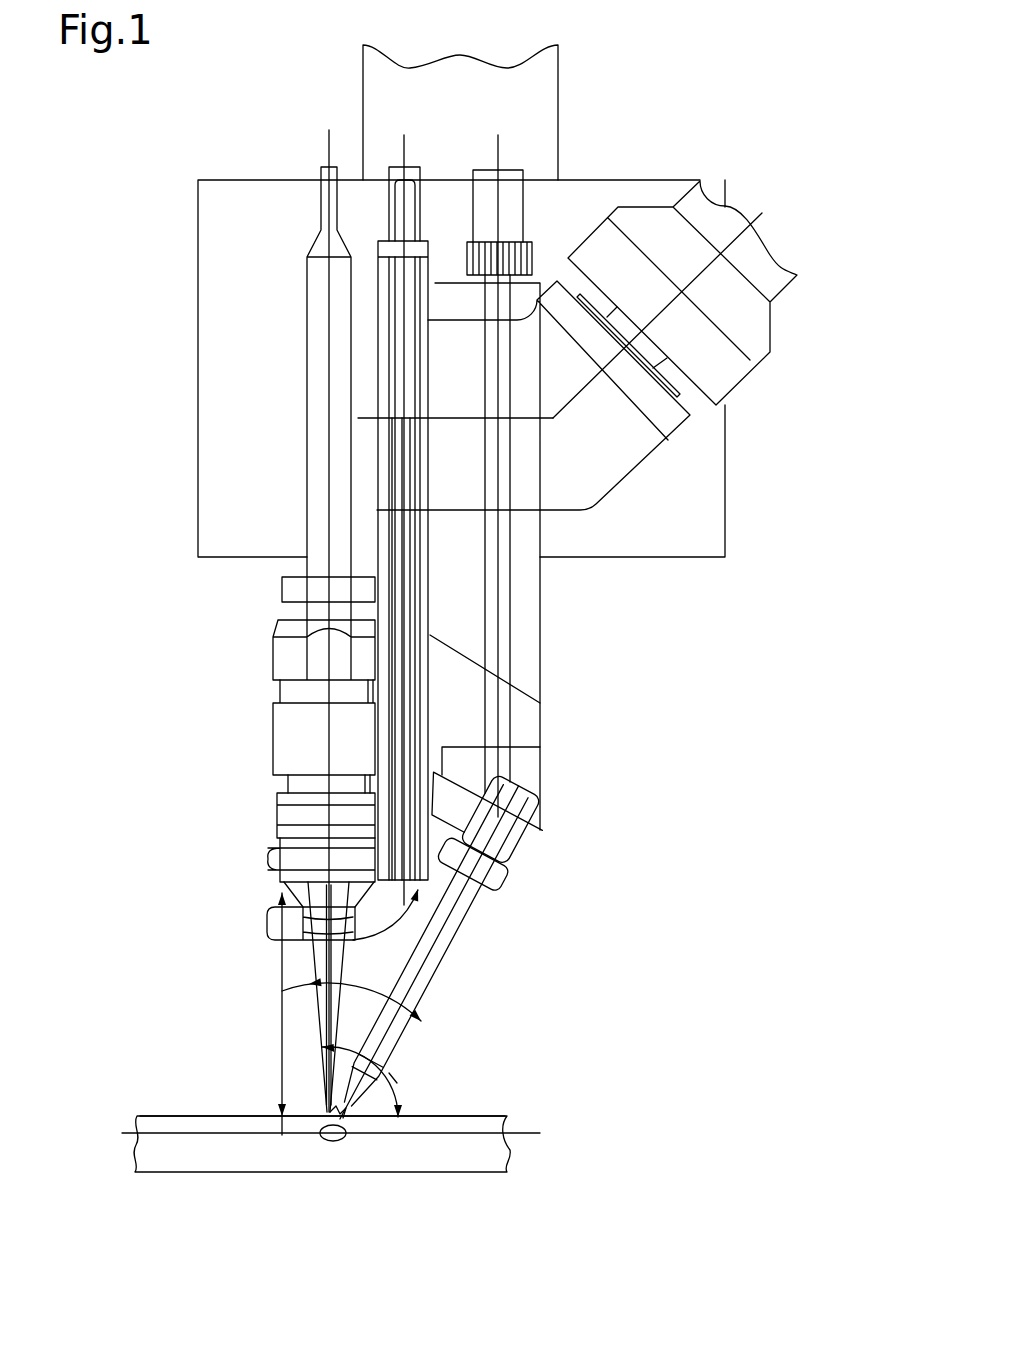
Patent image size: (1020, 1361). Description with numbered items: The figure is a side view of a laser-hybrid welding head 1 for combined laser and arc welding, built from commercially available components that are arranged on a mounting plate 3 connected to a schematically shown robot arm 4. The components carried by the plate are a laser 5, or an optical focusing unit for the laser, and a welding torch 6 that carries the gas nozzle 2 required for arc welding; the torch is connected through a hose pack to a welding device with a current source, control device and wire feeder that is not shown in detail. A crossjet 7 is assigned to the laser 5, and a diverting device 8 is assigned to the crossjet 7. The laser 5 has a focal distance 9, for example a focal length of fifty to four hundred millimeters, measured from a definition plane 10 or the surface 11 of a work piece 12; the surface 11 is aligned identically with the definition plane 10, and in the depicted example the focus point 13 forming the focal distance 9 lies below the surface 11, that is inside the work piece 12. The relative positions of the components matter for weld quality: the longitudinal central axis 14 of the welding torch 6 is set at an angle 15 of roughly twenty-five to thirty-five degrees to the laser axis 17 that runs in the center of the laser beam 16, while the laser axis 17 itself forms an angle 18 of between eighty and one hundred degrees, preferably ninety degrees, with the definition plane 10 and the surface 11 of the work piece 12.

The laser-hybrid welding head 1 is at (632, 1005).
The gas nozzle 2 is at (400, 1088).
The mounting plate 3 is at (233, 353).
The robot arm 4 is at (528, 100).
The laser 5 is at (236, 724).
The welding torch 6 is at (598, 745).
The crossjet 7 is at (277, 923).
The diverting device 8 is at (425, 893).
The focal distance 9 is at (279, 1000).
The definition plane 10 is at (544, 1136).
The surface 11 is at (184, 1115).
The work piece 12 is at (465, 1158).
The focus point 13 is at (323, 1142).
The longitudinal central axis 14 is at (420, 978).
The angle 15 is at (351, 991).
The laser beam 16 is at (317, 1036).
The laser axis 17 is at (327, 950).
The angle 18 is at (393, 1078).